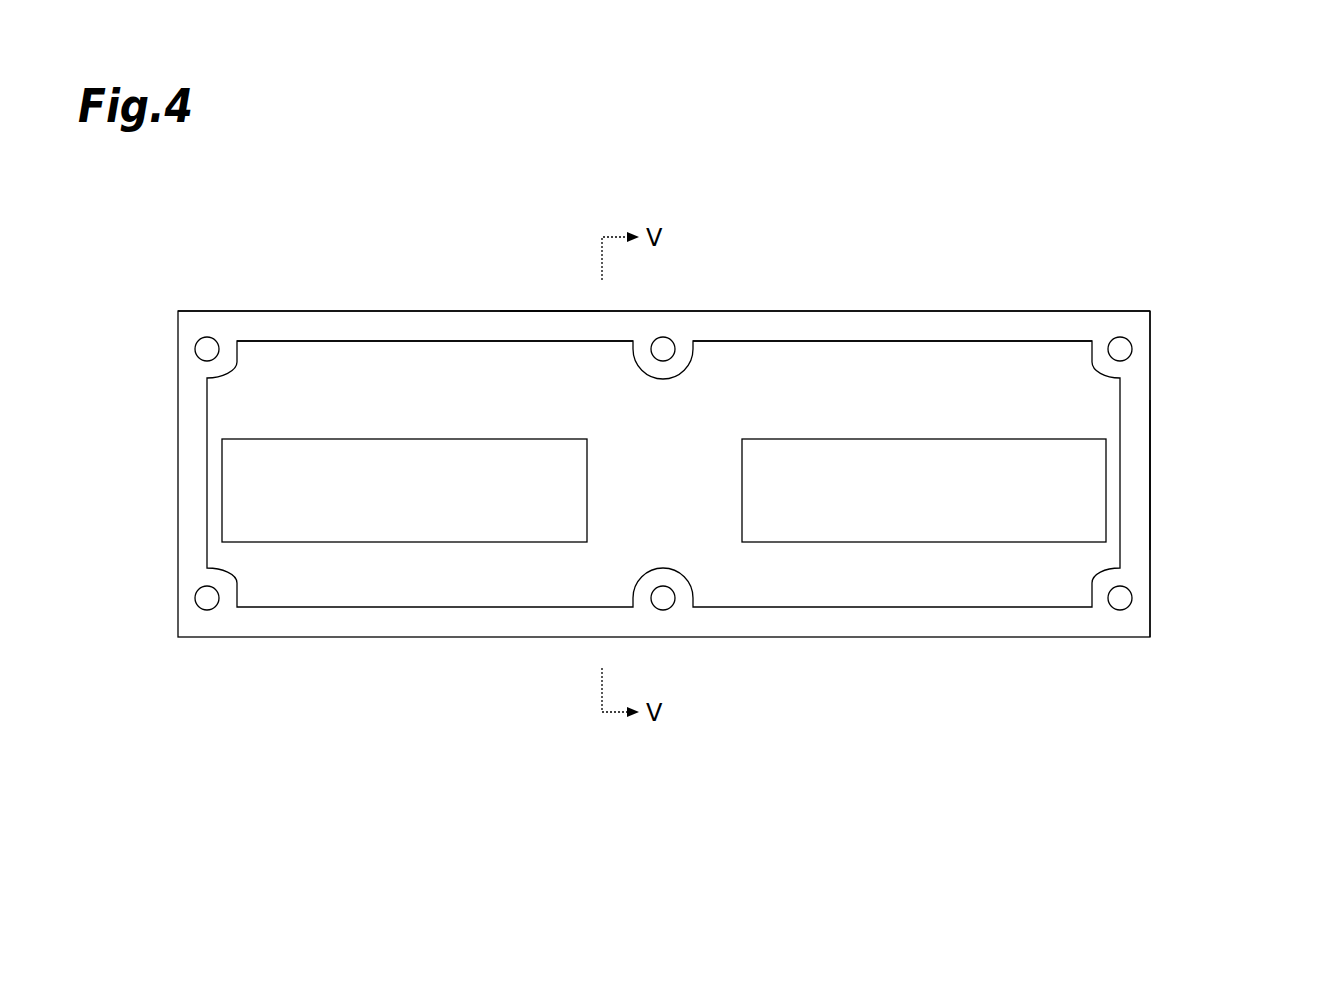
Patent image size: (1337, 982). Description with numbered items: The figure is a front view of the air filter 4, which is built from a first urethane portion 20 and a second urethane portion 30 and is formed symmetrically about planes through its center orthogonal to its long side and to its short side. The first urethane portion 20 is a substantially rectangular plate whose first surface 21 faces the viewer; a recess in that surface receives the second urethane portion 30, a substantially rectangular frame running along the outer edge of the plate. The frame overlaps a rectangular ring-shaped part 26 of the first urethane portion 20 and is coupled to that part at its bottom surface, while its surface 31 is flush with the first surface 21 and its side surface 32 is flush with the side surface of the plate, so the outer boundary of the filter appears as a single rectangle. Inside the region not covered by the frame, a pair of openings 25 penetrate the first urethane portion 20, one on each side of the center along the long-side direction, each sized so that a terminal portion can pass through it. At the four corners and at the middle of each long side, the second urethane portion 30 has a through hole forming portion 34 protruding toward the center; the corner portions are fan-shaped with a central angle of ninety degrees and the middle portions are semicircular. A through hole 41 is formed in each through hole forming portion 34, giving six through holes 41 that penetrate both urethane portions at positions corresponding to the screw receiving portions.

The air filter 4 is at (1120, 311).
The first urethane portion 20 is at (852, 370).
The first surface 21 is at (380, 372).
The opening 25 is at (413, 542).
The part of the first urethane portion 26 is at (550, 325).
The second urethane portion 30 is at (948, 325).
The surface 31 is at (478, 325).
The side surface 32 is at (1150, 463).
The through hole forming portion 34 is at (265, 362).
The through hole 41 is at (207, 338).